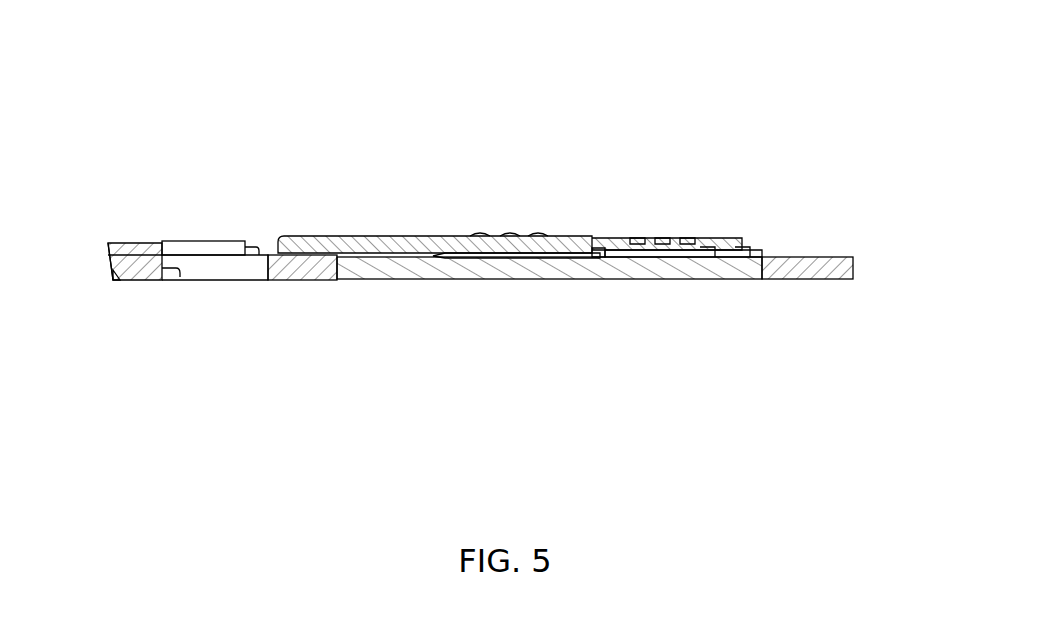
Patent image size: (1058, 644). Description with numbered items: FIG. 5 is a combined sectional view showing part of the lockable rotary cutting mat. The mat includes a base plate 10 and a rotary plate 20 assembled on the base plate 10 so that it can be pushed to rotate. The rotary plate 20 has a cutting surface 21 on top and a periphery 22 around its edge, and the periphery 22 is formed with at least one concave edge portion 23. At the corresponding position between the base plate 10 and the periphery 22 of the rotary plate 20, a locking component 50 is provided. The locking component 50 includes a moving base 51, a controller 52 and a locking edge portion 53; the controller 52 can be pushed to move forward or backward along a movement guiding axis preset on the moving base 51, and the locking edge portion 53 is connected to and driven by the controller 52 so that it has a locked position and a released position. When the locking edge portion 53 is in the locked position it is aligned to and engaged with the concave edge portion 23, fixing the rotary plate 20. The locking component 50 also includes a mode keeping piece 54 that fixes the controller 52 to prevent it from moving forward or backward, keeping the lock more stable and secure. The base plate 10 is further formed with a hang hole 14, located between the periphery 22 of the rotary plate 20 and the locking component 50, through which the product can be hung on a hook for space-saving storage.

The base plate 10 is at (826, 279).
The hang hole 14 is at (180, 273).
The rotary plate 20 is at (196, 228).
The cutting surface 21 is at (143, 240).
The periphery 22 is at (250, 260).
The concave edge portion 23 is at (181, 241).
The locking component 50 is at (447, 92).
The moving base 51 is at (462, 260).
The controller 52 is at (557, 236).
The locking edge portion 53 is at (278, 245).
The mode keeping piece 54 is at (665, 236).